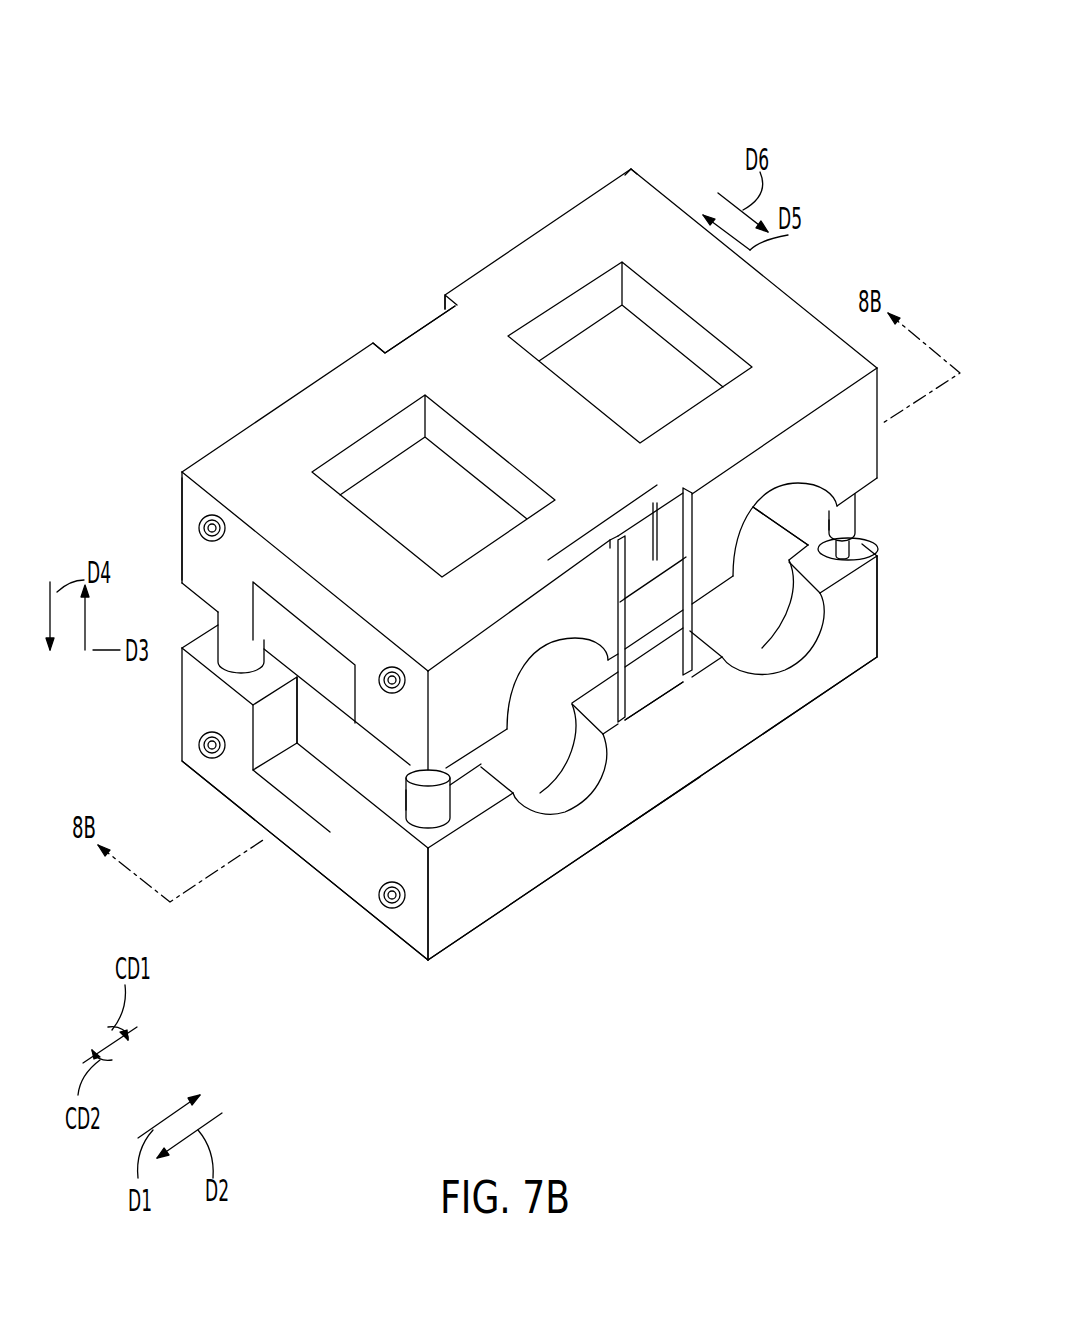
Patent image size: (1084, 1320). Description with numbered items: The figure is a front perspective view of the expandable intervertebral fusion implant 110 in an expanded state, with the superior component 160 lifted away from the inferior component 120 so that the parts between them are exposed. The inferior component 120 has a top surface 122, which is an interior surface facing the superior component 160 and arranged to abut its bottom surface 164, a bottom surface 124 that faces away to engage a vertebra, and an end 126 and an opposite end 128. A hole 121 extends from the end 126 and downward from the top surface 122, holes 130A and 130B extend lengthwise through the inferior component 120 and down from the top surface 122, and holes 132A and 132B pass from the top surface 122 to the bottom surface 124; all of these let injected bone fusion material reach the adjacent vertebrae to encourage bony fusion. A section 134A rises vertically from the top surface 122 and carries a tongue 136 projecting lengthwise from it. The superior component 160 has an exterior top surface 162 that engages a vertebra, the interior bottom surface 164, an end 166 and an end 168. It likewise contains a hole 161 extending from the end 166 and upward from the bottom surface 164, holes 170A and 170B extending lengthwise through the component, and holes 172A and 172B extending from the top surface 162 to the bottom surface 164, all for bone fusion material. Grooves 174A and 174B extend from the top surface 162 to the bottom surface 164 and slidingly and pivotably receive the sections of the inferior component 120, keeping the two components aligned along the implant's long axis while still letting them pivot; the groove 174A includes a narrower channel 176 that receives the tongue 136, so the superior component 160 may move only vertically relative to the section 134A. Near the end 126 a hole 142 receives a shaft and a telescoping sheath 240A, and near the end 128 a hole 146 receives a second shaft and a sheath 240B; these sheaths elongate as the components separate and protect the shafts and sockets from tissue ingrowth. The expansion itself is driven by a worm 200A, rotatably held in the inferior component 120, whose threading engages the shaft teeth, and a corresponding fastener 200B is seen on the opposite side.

The expandable intervertebral fusion implant 110 is at (840, 96).
The inferior component 120 is at (512, 998).
The hole 121 is at (313, 789).
The top surface 122 is at (700, 652).
The bottom surface 124 is at (665, 806).
The end 126 is at (415, 933).
The end 128 is at (880, 615).
The hole 130A is at (801, 662).
The hole 130B is at (563, 816).
The hole 132A is at (763, 589).
The hole 132B is at (366, 757).
The section 134A is at (658, 682).
The tongue 136 is at (652, 578).
The hole 142 is at (447, 828).
The hole 146 is at (872, 550).
The superior component 160 is at (560, 115).
The hole 161 is at (246, 617).
The top surface 162 is at (620, 183).
The bottom surface 164 is at (872, 489).
The end 166 is at (188, 500).
The end 168 is at (790, 290).
The hole 170A is at (800, 476).
The hole 170B is at (519, 661).
The hole 172A is at (582, 272).
The hole 172B is at (374, 421).
The groove 174A is at (636, 512).
The groove 174B is at (425, 323).
The channel 176 is at (612, 518).
The worm 200A is at (200, 750).
The fasteners 200B is at (201, 535).
The sheath 240A is at (443, 796).
The sheath 240B is at (848, 536).